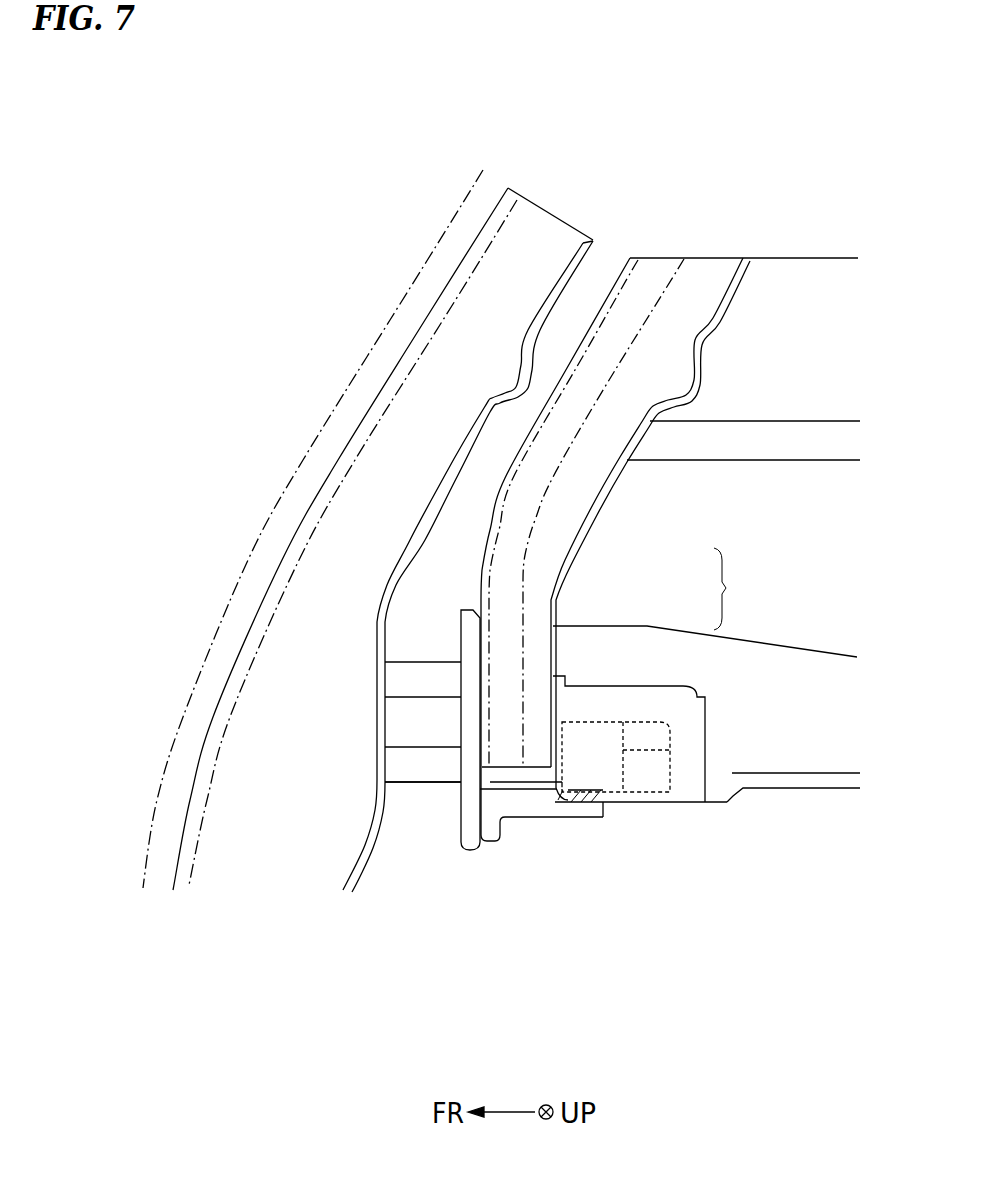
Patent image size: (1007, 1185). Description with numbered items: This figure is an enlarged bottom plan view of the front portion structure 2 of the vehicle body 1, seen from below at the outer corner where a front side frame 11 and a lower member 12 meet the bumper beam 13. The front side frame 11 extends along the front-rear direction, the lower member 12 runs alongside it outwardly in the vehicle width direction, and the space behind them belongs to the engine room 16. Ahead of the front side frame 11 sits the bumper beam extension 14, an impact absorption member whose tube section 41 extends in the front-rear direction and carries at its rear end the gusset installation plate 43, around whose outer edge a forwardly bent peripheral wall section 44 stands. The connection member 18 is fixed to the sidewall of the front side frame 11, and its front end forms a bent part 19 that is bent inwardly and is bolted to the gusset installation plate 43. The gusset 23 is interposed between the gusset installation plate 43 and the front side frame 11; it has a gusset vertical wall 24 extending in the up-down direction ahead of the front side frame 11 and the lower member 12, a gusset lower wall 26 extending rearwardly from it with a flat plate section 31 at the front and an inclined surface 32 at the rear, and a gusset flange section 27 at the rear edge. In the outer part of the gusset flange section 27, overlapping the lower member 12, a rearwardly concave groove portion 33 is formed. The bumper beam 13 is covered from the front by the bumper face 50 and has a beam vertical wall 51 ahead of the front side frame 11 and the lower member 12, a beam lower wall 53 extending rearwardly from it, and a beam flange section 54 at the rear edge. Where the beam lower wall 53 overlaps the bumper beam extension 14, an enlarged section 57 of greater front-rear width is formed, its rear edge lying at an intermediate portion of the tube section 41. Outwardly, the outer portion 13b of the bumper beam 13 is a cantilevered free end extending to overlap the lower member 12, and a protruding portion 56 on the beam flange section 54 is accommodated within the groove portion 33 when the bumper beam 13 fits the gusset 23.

The vehicle body 1 is at (403, 134).
The front portion structure 2 is at (374, 90).
The front side frame 11 is at (788, 728).
The lower member 12 is at (790, 290).
The bumper beam 13 is at (164, 443).
The outer portion 13b is at (214, 491).
The bumper beam extension 14 is at (406, 792).
The engine room 16 is at (722, 873).
The connection member 18 is at (570, 818).
The bent part 19 is at (497, 830).
The gusset 23 is at (661, 250).
The gusset vertical wall 24 is at (487, 530).
The gusset lower wall 26 is at (680, 664).
The gusset flange section 27 is at (618, 468).
The flat plate section 31 is at (503, 597).
The inclined surface 32 is at (553, 527).
The groove portion 33 is at (693, 363).
The tube section 41 is at (427, 770).
The gusset installation plate 43 is at (510, 798).
The peripheral wall section 44 is at (470, 853).
The bumper face 50 is at (185, 707).
The beam vertical wall 51 is at (390, 370).
The beam lower wall 53 is at (497, 305).
The beam flange section 54 is at (593, 260).
The protruding portion 56 is at (518, 398).
The enlarged section 57 is at (330, 848).